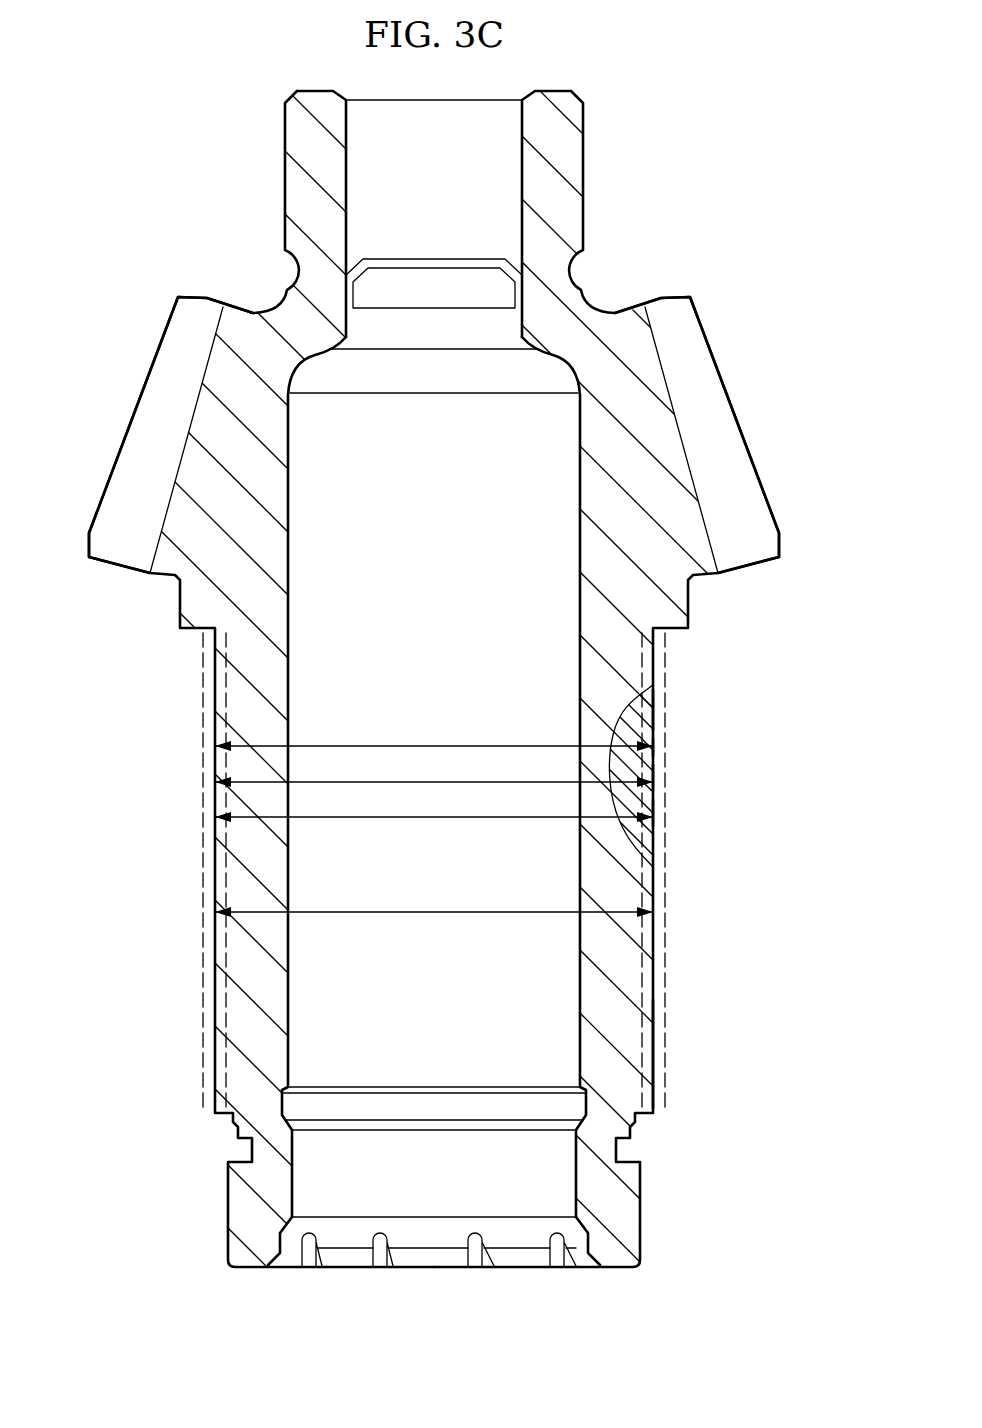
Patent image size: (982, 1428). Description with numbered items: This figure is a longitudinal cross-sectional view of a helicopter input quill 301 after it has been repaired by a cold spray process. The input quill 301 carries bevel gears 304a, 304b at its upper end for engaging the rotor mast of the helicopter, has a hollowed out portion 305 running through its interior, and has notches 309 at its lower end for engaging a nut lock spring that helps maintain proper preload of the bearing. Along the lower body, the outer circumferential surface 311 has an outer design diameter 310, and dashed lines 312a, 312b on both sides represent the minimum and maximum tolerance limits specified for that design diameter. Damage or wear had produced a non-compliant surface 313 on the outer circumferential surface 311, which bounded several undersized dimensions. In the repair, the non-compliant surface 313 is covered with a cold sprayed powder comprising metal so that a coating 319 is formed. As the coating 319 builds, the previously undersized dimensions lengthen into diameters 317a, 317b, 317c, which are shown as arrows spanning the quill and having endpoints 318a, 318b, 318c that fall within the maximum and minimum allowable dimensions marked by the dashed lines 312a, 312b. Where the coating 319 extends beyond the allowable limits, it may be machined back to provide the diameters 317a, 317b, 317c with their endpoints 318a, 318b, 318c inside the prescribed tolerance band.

The input quill 301 is at (728, 192).
The bevel gear 304a is at (723, 417).
The bevel gear 304b is at (142, 415).
The hollowed out portion 305 is at (410, 557).
The notches 309 is at (305, 1262).
The outer design diameter 310 is at (358, 912).
The outer circumferential surface 311 is at (653, 1067).
The dashed line 312a is at (226, 1005).
The dashed line 312b is at (202, 1030).
The non-compliant surface 313 is at (640, 848).
The diameter 317a is at (492, 745).
The diameter 317b is at (372, 781).
The diameter 317c is at (492, 818).
The endpoint 318a is at (657, 745).
The endpoint 318b is at (660, 773).
The endpoint 318c is at (660, 810).
The coating 319 is at (653, 717).